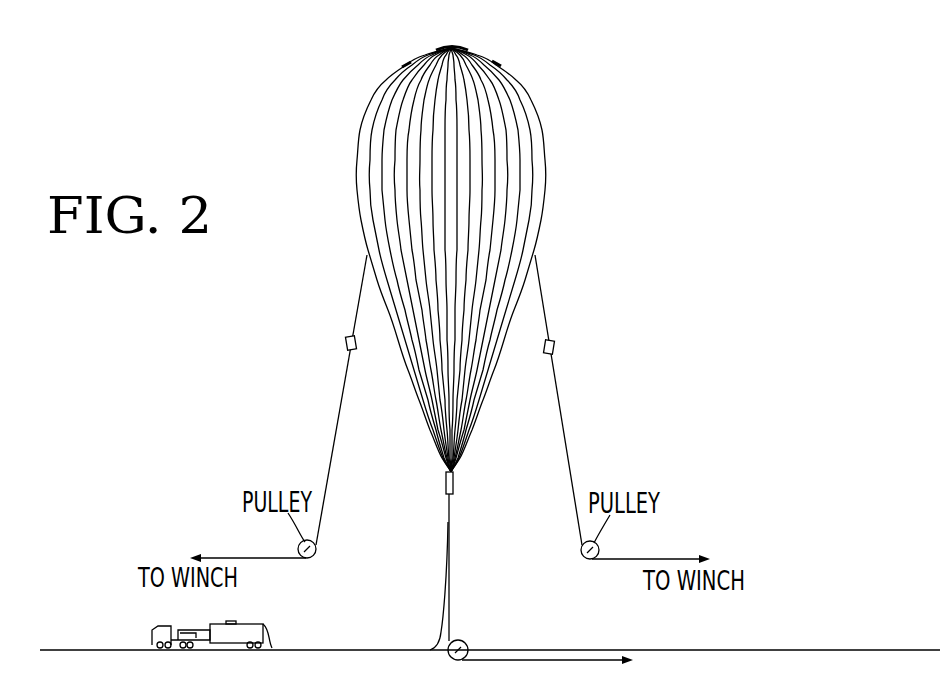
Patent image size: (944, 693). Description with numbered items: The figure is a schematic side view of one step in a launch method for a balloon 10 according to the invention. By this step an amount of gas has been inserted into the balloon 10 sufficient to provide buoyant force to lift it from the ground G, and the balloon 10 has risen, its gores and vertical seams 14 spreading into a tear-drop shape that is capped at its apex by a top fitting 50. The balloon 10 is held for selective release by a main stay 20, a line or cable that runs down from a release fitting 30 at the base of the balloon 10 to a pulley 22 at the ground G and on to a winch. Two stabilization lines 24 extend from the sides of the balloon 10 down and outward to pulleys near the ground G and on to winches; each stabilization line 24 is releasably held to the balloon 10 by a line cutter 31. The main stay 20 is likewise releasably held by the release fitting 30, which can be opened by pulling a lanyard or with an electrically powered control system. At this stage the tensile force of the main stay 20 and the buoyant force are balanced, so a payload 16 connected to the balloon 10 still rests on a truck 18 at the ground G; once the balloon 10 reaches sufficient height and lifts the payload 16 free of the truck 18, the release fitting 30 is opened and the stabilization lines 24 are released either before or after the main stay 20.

The balloon 10 is at (530, 91).
The gore / fabric panel 14 is at (385, 268).
The top cap fitting 50 is at (492, 61).
The stabilization lines 24 is at (337, 414).
The line cutters 31 is at (346, 341).
The release fitting 30 is at (455, 484).
The main stay 20 is at (451, 562).
The pulley 22 is at (458, 645).
The payload 16 is at (190, 627).
The truck 18 is at (244, 623).
The ground G is at (340, 648).